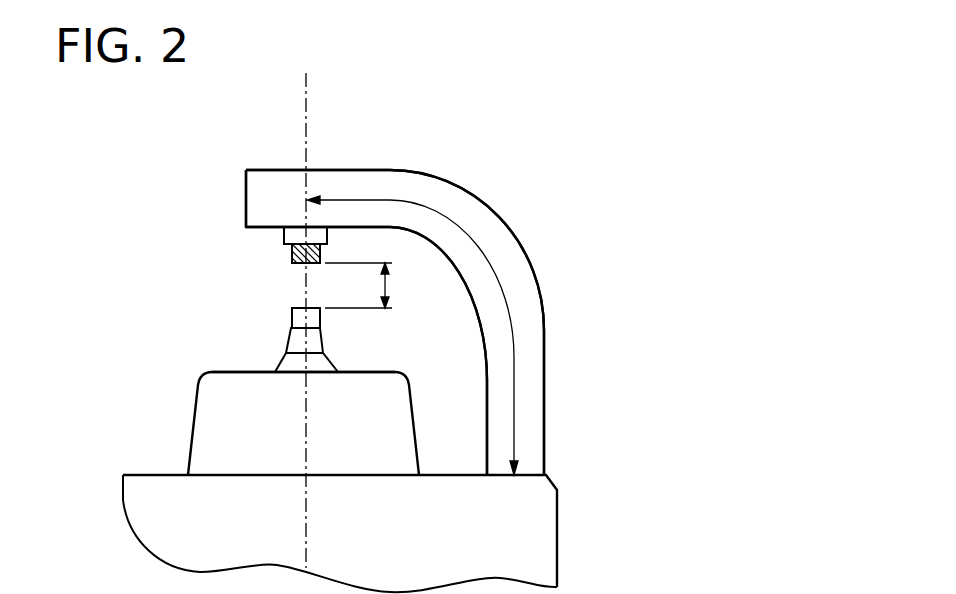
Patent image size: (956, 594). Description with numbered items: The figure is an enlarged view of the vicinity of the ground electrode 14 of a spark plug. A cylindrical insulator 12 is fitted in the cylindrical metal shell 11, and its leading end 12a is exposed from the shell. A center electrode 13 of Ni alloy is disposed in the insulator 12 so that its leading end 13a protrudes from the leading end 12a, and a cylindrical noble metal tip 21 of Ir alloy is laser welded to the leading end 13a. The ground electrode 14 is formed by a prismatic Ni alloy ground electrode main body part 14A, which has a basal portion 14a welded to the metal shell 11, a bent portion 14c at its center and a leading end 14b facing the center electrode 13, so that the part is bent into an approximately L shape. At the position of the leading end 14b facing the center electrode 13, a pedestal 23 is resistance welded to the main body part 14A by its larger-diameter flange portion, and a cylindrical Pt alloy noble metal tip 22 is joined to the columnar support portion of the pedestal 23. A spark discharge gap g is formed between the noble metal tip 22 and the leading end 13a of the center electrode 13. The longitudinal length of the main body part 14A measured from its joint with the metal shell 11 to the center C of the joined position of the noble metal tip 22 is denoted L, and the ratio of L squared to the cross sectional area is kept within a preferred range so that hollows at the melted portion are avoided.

The metal shell 11 is at (532, 540).
The insulator 12 is at (207, 427).
The leading end of insulator 12a is at (207, 387).
The center electrode 13 is at (283, 367).
The leading end of center electrode 13a is at (295, 358).
The ground electrode 14 is at (527, 161).
The basal portion 14a is at (532, 455).
The leading end of ground electrode main body part 14b is at (281, 188).
The bent portion 14c is at (502, 263).
The ground electrode main body part 14A is at (523, 303).
The noble metal tip 21 is at (300, 318).
The noble metal tip 22 is at (292, 258).
The pedestal 23 is at (283, 237).
The center of joined position of noble metal tip C is at (306, 97).
The longitudinal length of ground electrode main body part L is at (515, 358).
The spark discharge gap g is at (366, 285).